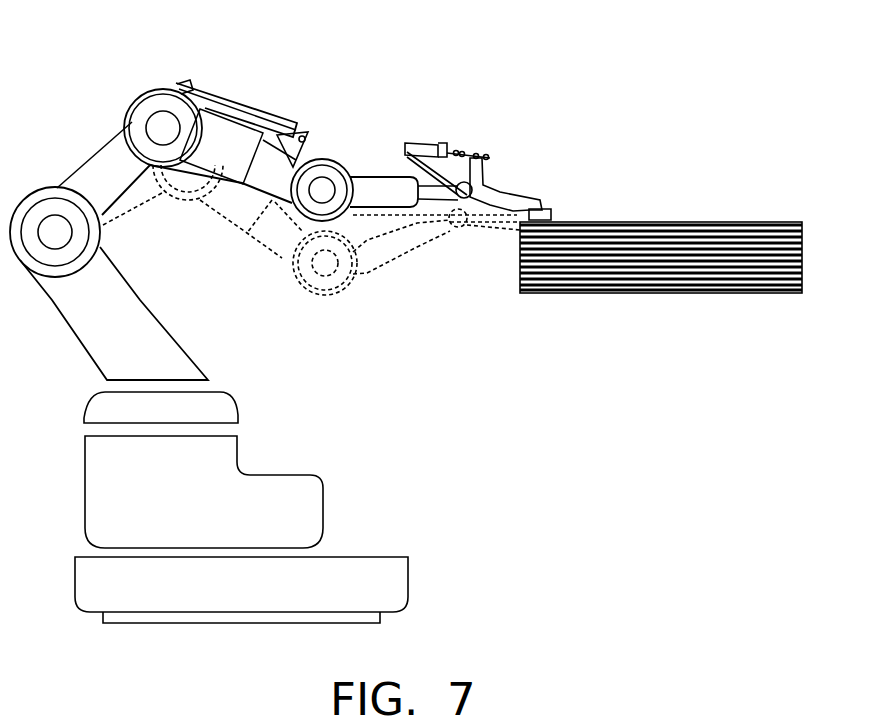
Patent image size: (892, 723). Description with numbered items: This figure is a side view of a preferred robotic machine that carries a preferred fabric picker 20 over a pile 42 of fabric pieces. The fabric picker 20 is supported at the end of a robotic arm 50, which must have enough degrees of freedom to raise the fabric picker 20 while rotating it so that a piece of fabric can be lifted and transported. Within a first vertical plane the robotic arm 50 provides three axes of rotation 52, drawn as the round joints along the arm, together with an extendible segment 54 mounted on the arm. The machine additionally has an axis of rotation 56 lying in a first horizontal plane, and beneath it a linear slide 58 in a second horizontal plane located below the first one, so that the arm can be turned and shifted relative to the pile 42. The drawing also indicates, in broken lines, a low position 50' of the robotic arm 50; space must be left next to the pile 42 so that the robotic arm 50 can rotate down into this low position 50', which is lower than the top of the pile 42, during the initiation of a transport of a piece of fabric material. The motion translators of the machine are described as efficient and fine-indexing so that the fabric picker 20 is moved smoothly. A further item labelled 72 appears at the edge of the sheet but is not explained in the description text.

The fabric picker 20 is at (514, 150).
The pile of fabric pieces 42 is at (663, 222).
The robotic arm 50 is at (244, 210).
The low position 50' is at (311, 268).
The axes of rotation 52 is at (148, 89).
The extendible segment 54 is at (243, 151).
The axis of rotation 56 is at (258, 426).
The linear slide 58 is at (338, 537).
The controller / support 72 is at (680, 722).